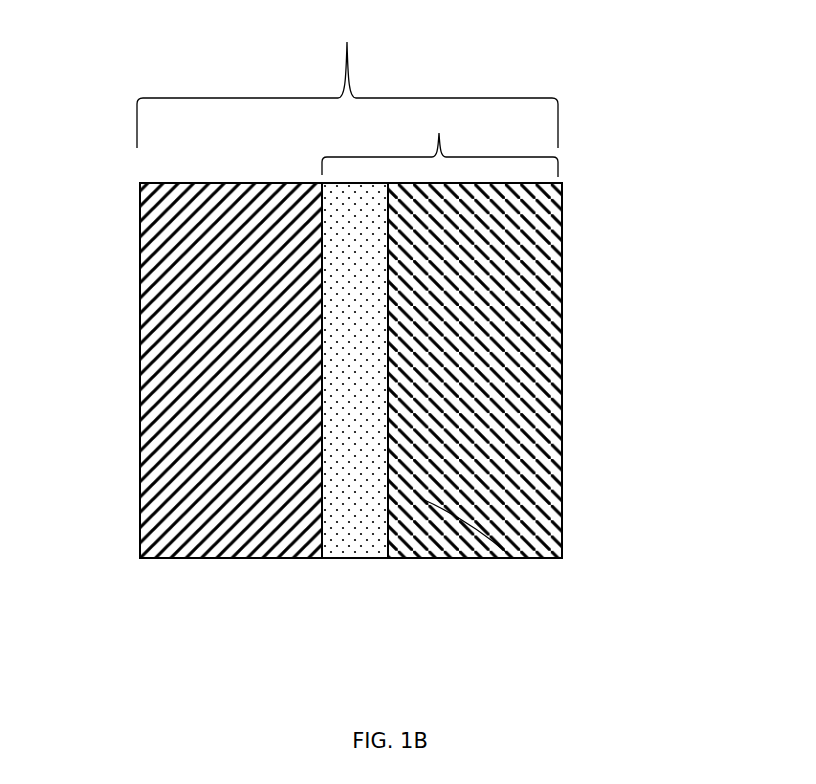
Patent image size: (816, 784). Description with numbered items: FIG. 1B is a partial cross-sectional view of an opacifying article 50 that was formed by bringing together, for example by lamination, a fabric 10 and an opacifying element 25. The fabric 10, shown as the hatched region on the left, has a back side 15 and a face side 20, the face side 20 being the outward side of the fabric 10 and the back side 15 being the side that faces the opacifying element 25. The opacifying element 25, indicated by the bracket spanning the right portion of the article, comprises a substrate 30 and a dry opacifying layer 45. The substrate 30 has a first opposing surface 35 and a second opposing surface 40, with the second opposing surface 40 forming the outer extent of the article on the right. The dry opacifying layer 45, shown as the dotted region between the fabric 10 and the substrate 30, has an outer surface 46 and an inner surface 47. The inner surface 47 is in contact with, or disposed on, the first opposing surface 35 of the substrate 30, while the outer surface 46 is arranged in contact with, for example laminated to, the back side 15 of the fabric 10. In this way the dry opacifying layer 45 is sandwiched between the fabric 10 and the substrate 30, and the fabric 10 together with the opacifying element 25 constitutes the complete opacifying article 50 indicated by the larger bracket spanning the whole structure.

The fabric 10 is at (170, 583).
The back side 15 is at (303, 512).
The face side 20 is at (140, 312).
The opacifying element 25 is at (440, 145).
The substrate 30 is at (448, 545).
The first opposing surface 35 is at (513, 558).
The second opposing surface 40 is at (562, 315).
The dry opacifying layer 45 is at (352, 558).
The outer surface 46 is at (325, 525).
The inner surface 47 is at (388, 538).
The opacifying article 50 is at (347, 83).